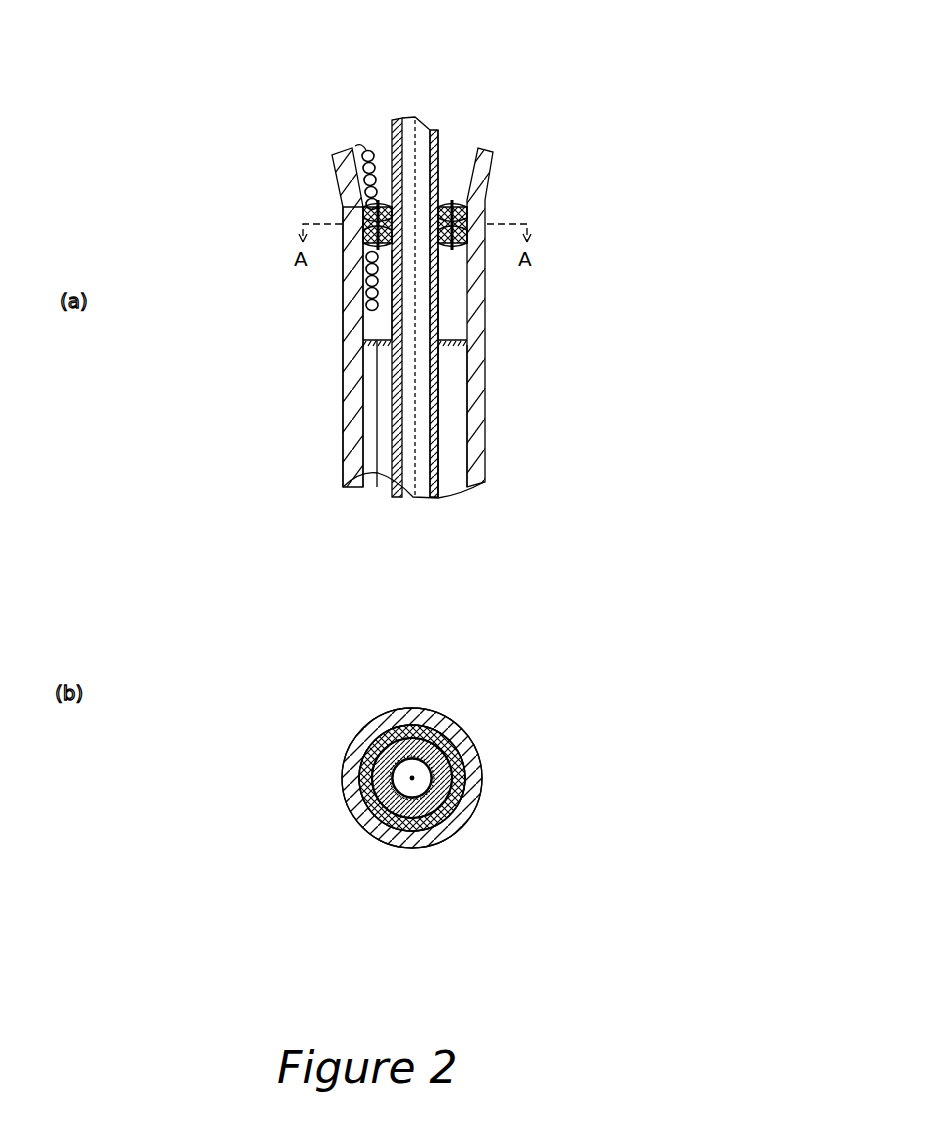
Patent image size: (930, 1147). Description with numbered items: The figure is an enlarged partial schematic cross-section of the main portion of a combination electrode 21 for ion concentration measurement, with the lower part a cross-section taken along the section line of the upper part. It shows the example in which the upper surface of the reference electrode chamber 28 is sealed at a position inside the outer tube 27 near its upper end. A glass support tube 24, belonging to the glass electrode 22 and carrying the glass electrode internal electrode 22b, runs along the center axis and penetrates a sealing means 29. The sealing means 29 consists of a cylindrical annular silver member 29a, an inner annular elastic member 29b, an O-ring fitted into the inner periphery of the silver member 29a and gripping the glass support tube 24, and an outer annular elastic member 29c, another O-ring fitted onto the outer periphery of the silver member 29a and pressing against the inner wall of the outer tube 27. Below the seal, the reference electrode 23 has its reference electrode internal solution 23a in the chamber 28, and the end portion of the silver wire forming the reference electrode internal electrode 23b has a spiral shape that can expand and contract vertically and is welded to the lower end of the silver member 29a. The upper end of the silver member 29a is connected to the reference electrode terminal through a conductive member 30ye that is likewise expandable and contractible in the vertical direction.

The combination electrode for ion concentration measurement 21 is at (480, 107).
The glass electrode 22 is at (440, 322).
The glass electrode internal electrode 22b is at (416, 452).
The reference electrode 23 is at (487, 370).
The reference electrode internal solution 23a is at (450, 468).
The reference electrode internal electrode 23b is at (376, 375).
The glass support tube 24 is at (433, 413).
The outer tube 27 is at (355, 435).
The reference electrode chamber 28 is at (452, 286).
The sealing means 29 is at (173, 100).
The annular silver member 29a is at (365, 212).
The annular elastic member 29b is at (365, 224).
The annular elastic member 29c is at (365, 236).
The conductive member 30ye is at (365, 160).